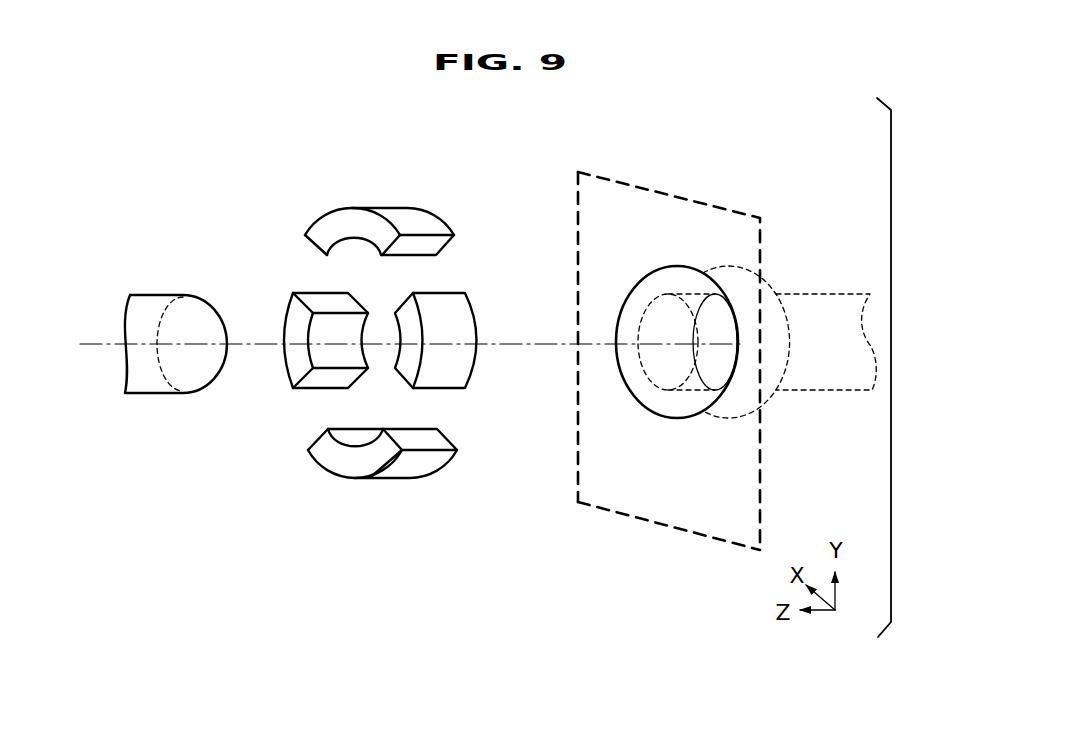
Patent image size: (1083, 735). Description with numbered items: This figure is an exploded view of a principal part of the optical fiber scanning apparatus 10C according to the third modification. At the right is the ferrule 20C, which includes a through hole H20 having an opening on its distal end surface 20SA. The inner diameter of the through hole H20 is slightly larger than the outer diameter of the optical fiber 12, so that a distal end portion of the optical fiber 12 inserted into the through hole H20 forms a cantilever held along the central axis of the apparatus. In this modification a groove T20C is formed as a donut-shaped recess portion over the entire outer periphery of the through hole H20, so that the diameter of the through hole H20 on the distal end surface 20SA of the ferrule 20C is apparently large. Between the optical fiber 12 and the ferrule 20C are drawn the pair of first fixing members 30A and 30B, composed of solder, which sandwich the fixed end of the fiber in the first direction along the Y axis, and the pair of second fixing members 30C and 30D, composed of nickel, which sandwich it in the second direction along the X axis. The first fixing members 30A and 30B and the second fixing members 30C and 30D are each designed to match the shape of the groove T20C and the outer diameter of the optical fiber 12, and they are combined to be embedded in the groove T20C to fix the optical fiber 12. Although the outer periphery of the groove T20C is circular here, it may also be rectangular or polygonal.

The optical fiber scanning apparatus 10C is at (162, 207).
The optical fiber 12 is at (170, 295).
The first fixing member 30A is at (323, 209).
The first fixing member 30B is at (341, 478).
The second fixing member 30C is at (285, 303).
The second fixing member 30D is at (473, 305).
The ferrule 20C is at (688, 200).
The distal end surface 20SA is at (668, 495).
The groove T20C is at (676, 408).
The through hole H20 is at (668, 367).